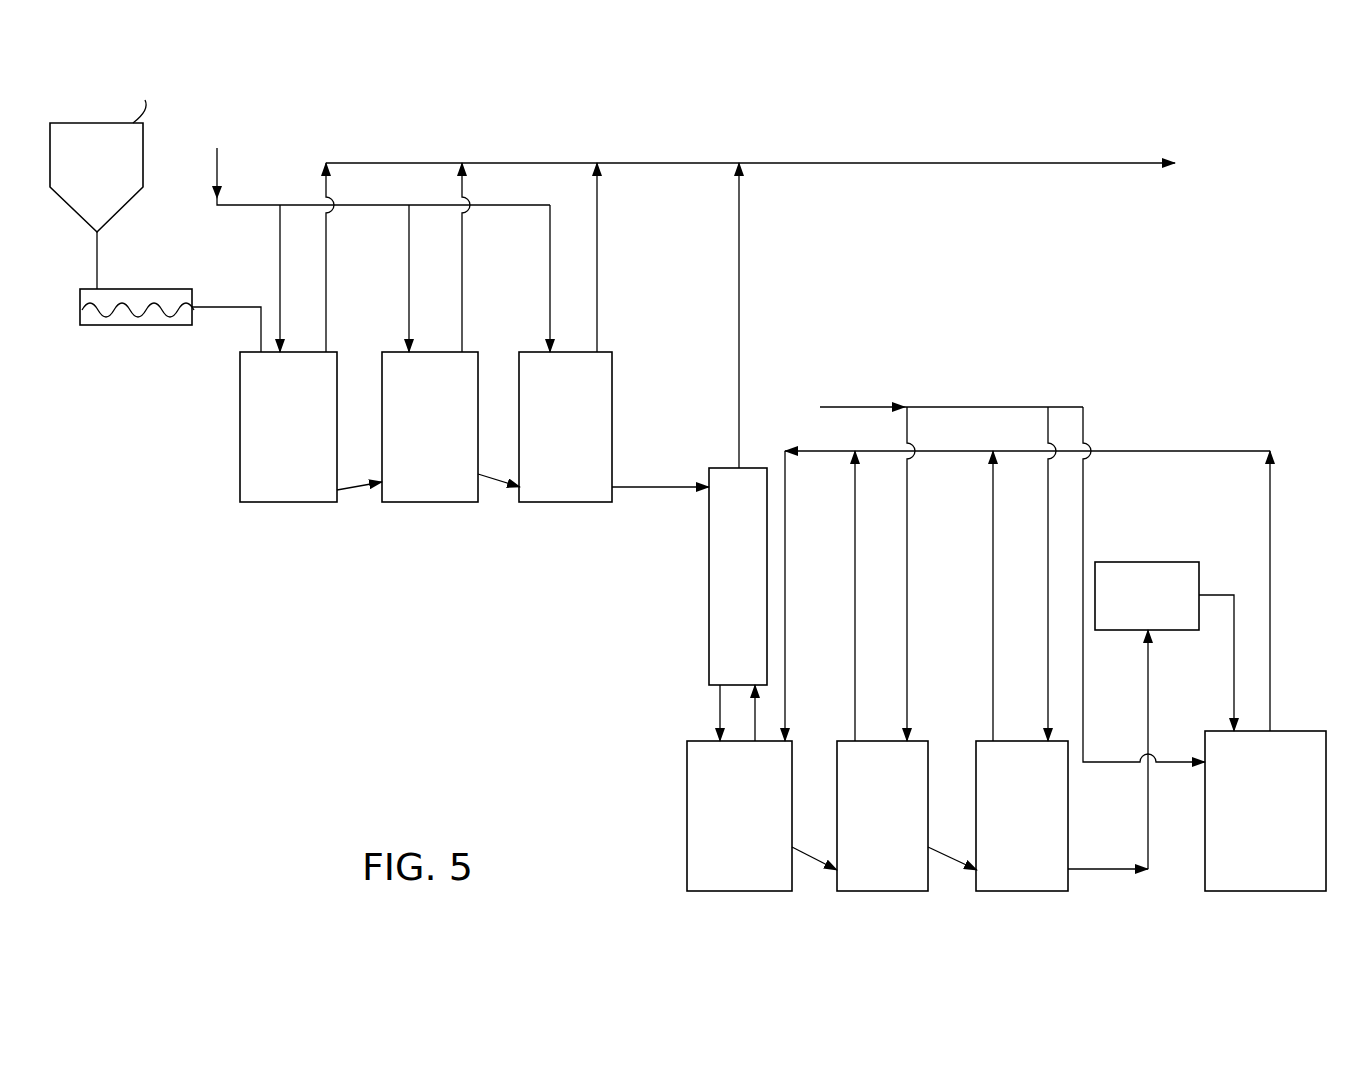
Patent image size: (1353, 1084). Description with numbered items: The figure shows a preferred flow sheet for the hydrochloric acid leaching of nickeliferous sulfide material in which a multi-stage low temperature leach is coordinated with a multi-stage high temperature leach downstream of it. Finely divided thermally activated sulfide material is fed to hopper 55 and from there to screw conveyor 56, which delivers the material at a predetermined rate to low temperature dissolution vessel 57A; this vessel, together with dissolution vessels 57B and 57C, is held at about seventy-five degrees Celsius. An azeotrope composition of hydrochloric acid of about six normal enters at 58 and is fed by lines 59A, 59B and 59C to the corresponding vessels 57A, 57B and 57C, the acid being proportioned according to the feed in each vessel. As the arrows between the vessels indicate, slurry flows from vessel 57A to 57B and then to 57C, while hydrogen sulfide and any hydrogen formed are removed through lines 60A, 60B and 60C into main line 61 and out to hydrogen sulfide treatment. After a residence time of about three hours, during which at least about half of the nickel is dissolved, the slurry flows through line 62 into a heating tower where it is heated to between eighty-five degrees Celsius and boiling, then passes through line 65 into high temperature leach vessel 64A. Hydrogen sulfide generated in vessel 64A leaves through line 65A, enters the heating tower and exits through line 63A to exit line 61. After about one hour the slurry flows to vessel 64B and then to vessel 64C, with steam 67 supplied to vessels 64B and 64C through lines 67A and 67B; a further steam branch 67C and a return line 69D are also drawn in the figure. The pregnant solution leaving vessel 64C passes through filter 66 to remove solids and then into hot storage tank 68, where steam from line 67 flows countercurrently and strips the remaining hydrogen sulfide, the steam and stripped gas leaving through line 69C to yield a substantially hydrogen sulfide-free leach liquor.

The hopper 55 is at (50, 160).
The screw conveyor 56 is at (80, 309).
The low temperature dissolution vessel 57A is at (240, 478).
The dissolution vessel 57B is at (406, 504).
The dissolution vessel 57C is at (530, 504).
The HCl azeotrope feed 58 is at (217, 168).
The acid feed line 59A is at (280, 258).
The acid feed line 59B is at (409, 267).
The acid feed line 59C is at (550, 270).
The gas removal line 60A is at (326, 192).
The gas removal line 60B is at (462, 195).
The gas removal line 60C is at (597, 193).
The main line 61 is at (830, 163).
The slurry transfer line 62 is at (650, 490).
The gas exit line 63A is at (740, 247).
The high temperature leach vessel 64A is at (687, 829).
The high temperature vessel 64B is at (896, 893).
The high temperature vessel 64C is at (1000, 893).
The slurry line 65 is at (718, 709).
The gas line 65A is at (757, 716).
The filter 66 is at (1130, 562).
The steam 67 is at (950, 407).
The steam line 67A is at (907, 601).
The steam line 67B is at (1048, 572).
The steam branch line 67C is at (1085, 491).
The hot storage tank 68 is at (1255, 893).
The steam and stripped H2S exit line 69C is at (1272, 519).
The vapor return line 69D is at (785, 665).